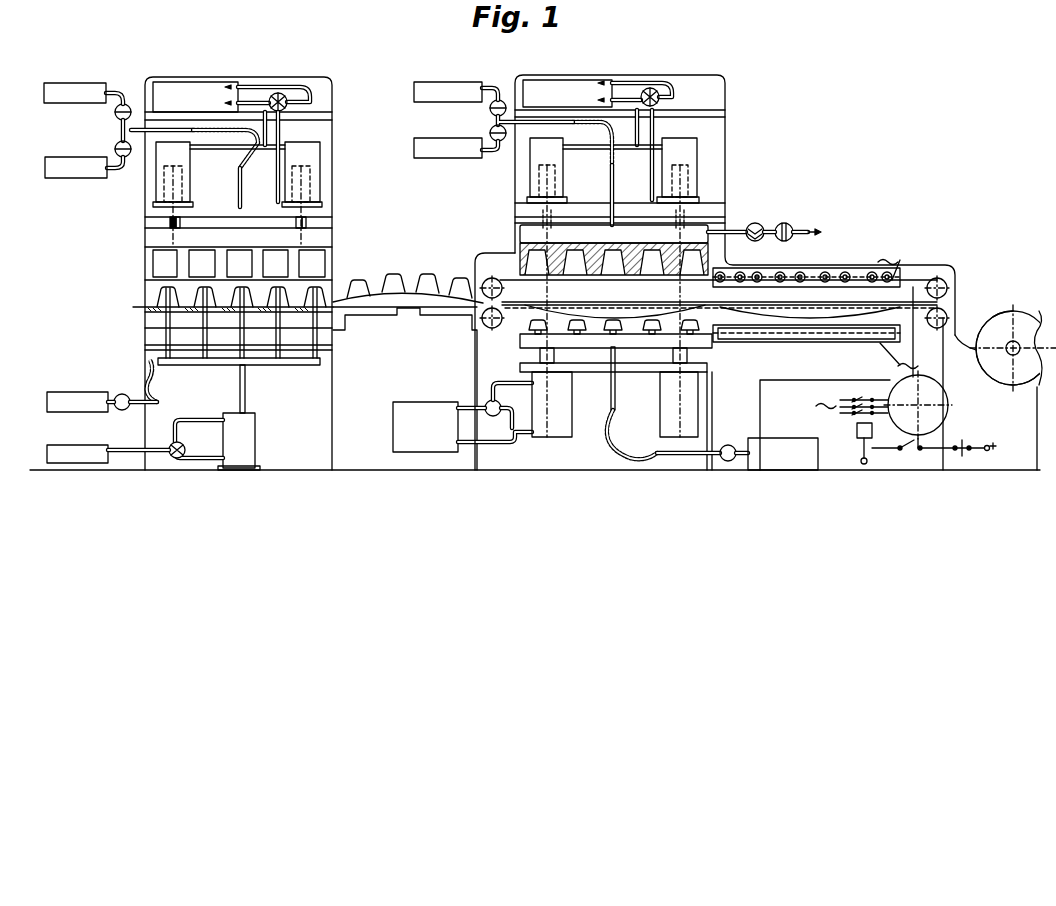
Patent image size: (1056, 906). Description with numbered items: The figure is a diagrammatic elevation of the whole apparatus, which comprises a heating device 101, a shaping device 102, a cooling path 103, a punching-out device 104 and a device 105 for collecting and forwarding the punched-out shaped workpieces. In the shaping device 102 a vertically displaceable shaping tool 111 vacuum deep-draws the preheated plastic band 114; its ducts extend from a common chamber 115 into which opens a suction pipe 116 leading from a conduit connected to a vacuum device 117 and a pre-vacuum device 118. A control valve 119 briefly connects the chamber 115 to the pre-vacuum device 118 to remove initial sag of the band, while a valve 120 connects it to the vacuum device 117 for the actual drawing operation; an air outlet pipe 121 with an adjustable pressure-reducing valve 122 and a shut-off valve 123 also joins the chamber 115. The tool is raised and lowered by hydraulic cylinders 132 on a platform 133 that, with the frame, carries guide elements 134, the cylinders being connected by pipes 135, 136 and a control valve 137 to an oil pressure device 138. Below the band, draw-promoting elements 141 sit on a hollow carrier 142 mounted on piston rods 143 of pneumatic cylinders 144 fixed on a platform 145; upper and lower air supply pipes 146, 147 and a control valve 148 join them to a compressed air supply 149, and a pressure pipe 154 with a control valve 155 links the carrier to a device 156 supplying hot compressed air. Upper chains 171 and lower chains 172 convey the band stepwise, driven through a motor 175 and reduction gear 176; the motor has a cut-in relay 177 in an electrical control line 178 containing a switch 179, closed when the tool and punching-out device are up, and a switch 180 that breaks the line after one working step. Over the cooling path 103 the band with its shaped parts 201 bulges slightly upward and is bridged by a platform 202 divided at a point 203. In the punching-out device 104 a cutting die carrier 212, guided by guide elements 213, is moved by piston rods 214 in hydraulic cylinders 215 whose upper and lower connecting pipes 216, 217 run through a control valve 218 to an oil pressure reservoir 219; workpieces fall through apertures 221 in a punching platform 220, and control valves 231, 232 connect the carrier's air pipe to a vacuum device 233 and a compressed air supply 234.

The heating device 101 is at (850, 256).
The shaping device 102 is at (736, 178).
The cooling path 103 is at (418, 266).
The punching-out device 104 is at (340, 184).
The device for collecting and forwarding the punched-out shaped workpieces 105 is at (148, 357).
The shaping tool 111 is at (518, 253).
The plastic band 114 is at (374, 292).
The chamber 115 is at (614, 250).
The suction pipe 116 is at (615, 184).
The vacuum device 117 is at (430, 156).
The pre-vacuum device 118 is at (436, 86).
The control valve 119 is at (490, 112).
The valve 120 is at (490, 133).
The air outlet pipe 121 is at (738, 234).
The adjustable pressure-reducing valve 122 is at (760, 224).
The shut-off valve 123 is at (795, 238).
The hydraulic cylinders 132 is at (532, 162).
The platform 133 is at (725, 209).
The guide elements 134 is at (540, 185).
The pipe 135 is at (655, 125).
The pipe 136 is at (580, 146).
The control valve 137 is at (653, 89).
The oil pressure device 138 is at (565, 85).
The draw-promoting elements 141 is at (536, 326).
The carrier 142 is at (522, 347).
The piston rods 143 is at (547, 350).
The pneumatic cylinders 144 is at (566, 406).
The platform 145 is at (708, 370).
The upper air supply pipe 146 is at (487, 396).
The lower air supply pipe 147 is at (512, 444).
The control valve 148 is at (486, 402).
The compressed air supply 149 is at (406, 406).
The pressure pipe 154 is at (608, 457).
The control valve 155 is at (730, 445).
The device for supplying hot compressed air 156 is at (800, 444).
The upper chains 171 is at (908, 275).
The lower chains 172 is at (510, 340).
The motor 175 is at (948, 413).
The reduction gear 176 is at (935, 360).
The cut-in relay 177 is at (857, 442).
The electrical control line 178 is at (972, 451).
The switch 179 is at (962, 458).
The switch 180 is at (908, 451).
The shaped parts 201 is at (422, 275).
The platform 202 is at (368, 312).
The point 203 is at (400, 312).
The cutting die carrier 212 is at (150, 236).
The guide elements 213 is at (182, 224).
The piston rods 214 is at (174, 228).
The hydraulic cylinders 215 is at (188, 180).
The upper connecting pipe 216 is at (250, 197).
The lower connecting pipe 217 is at (210, 146).
The control valve 218 is at (280, 93).
The oil pressure reservoir 219 is at (160, 88).
The punching platform 220 is at (148, 311).
The apertures 221 is at (192, 311).
The control valve 231 is at (114, 118).
The control valve 232 is at (114, 148).
The vacuum device 233 is at (66, 86).
The compressed air supply 234 is at (62, 180).